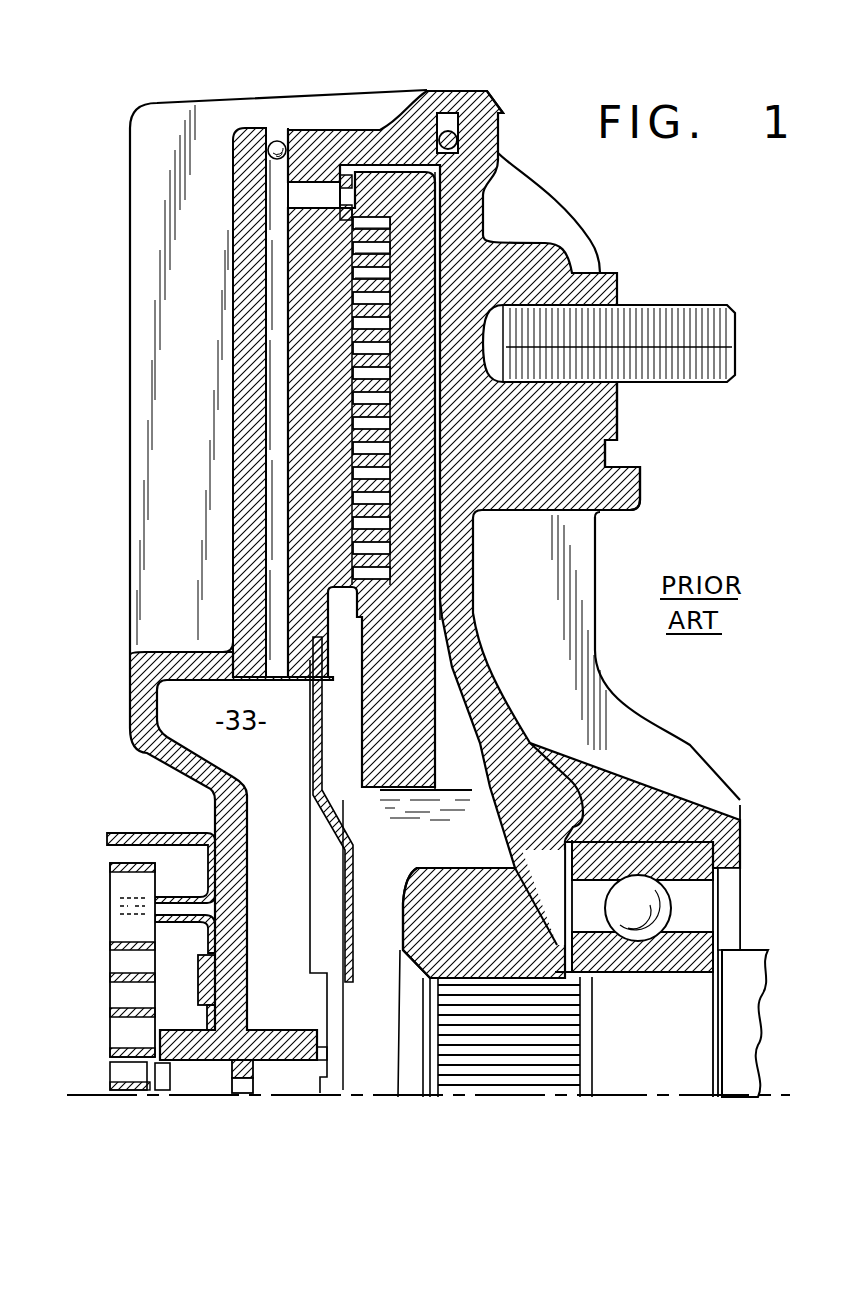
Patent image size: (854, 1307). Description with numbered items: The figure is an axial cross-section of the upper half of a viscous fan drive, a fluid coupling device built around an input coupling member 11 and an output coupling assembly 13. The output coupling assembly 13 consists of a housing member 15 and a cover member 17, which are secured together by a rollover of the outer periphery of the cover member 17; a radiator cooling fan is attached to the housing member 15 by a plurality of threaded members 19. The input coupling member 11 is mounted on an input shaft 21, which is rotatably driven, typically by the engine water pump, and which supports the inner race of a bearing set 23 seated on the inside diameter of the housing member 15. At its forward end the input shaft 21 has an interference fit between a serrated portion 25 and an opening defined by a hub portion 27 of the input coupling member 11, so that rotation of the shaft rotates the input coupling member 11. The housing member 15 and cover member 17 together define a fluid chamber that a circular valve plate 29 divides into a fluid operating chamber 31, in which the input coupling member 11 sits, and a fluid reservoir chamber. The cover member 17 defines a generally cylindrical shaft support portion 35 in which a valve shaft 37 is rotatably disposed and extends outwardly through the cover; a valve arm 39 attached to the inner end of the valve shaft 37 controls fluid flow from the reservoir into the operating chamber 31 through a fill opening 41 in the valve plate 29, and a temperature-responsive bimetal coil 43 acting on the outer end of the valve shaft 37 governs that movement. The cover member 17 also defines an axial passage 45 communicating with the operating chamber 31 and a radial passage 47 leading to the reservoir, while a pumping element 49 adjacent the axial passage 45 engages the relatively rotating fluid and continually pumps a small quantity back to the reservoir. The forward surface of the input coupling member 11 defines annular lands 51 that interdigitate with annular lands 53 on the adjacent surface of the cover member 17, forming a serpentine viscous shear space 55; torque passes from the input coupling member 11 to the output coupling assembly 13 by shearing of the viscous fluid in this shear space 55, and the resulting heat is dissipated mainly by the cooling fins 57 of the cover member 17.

The input coupling member 11 is at (457, 742).
The output coupling assembly 13 is at (470, 86).
The housing member 15 is at (625, 490).
The cover member 17 is at (132, 690).
The threaded members 19 is at (690, 305).
The input shaft 21 is at (762, 985).
The bearing set 23 is at (718, 906).
The serrated portion 25 is at (565, 1052).
The hub portion 27 is at (510, 885).
The valve plate 29 is at (353, 905).
The fluid operating chamber 31 is at (437, 625).
The shaft support portion 35 is at (290, 1045).
The valve shaft 37 is at (268, 1080).
The valve arm 39 is at (312, 827).
The fill opening 41 is at (322, 688).
The bimetal coil 43 is at (105, 970).
The axial passage 45 is at (318, 190).
The radial passage 47 is at (266, 250).
The pumping element 49 is at (346, 177).
The annular lands 51 is at (352, 382).
The annular lands 53 is at (362, 463).
The viscous shear space 55 is at (390, 445).
The cooling fins 57 is at (148, 280).